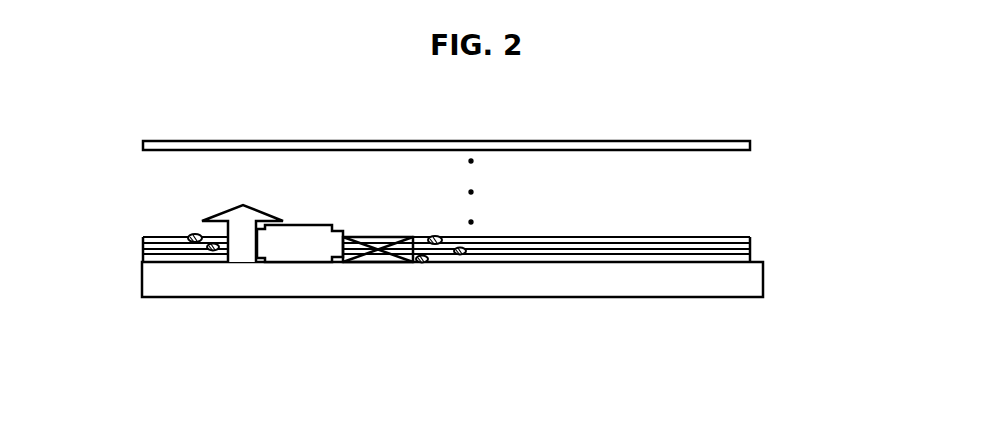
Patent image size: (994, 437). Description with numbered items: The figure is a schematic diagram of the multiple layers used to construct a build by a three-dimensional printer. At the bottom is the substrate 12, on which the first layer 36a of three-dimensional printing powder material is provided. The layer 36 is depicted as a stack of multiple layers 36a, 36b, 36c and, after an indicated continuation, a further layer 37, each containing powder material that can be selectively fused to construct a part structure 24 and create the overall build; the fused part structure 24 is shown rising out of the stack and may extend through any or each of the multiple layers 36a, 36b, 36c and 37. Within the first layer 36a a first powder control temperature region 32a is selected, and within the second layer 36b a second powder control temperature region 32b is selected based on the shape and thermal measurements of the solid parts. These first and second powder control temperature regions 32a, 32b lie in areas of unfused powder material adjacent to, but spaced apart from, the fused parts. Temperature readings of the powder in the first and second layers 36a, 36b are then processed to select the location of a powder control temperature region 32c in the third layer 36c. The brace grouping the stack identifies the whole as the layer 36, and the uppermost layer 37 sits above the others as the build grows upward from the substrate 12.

The substrate 12 is at (763, 288).
The part structure 24 is at (324, 214).
The first powder control temperature region 32a is at (426, 261).
The second powder control temperature region 32b is at (213, 251).
The powder control temperature region 32c is at (195, 245).
The layer 36 is at (493, 203).
The first layer 36a is at (750, 257).
The second layer 36b is at (750, 249).
The third layer 36c is at (750, 241).
The layer 37 is at (750, 146).